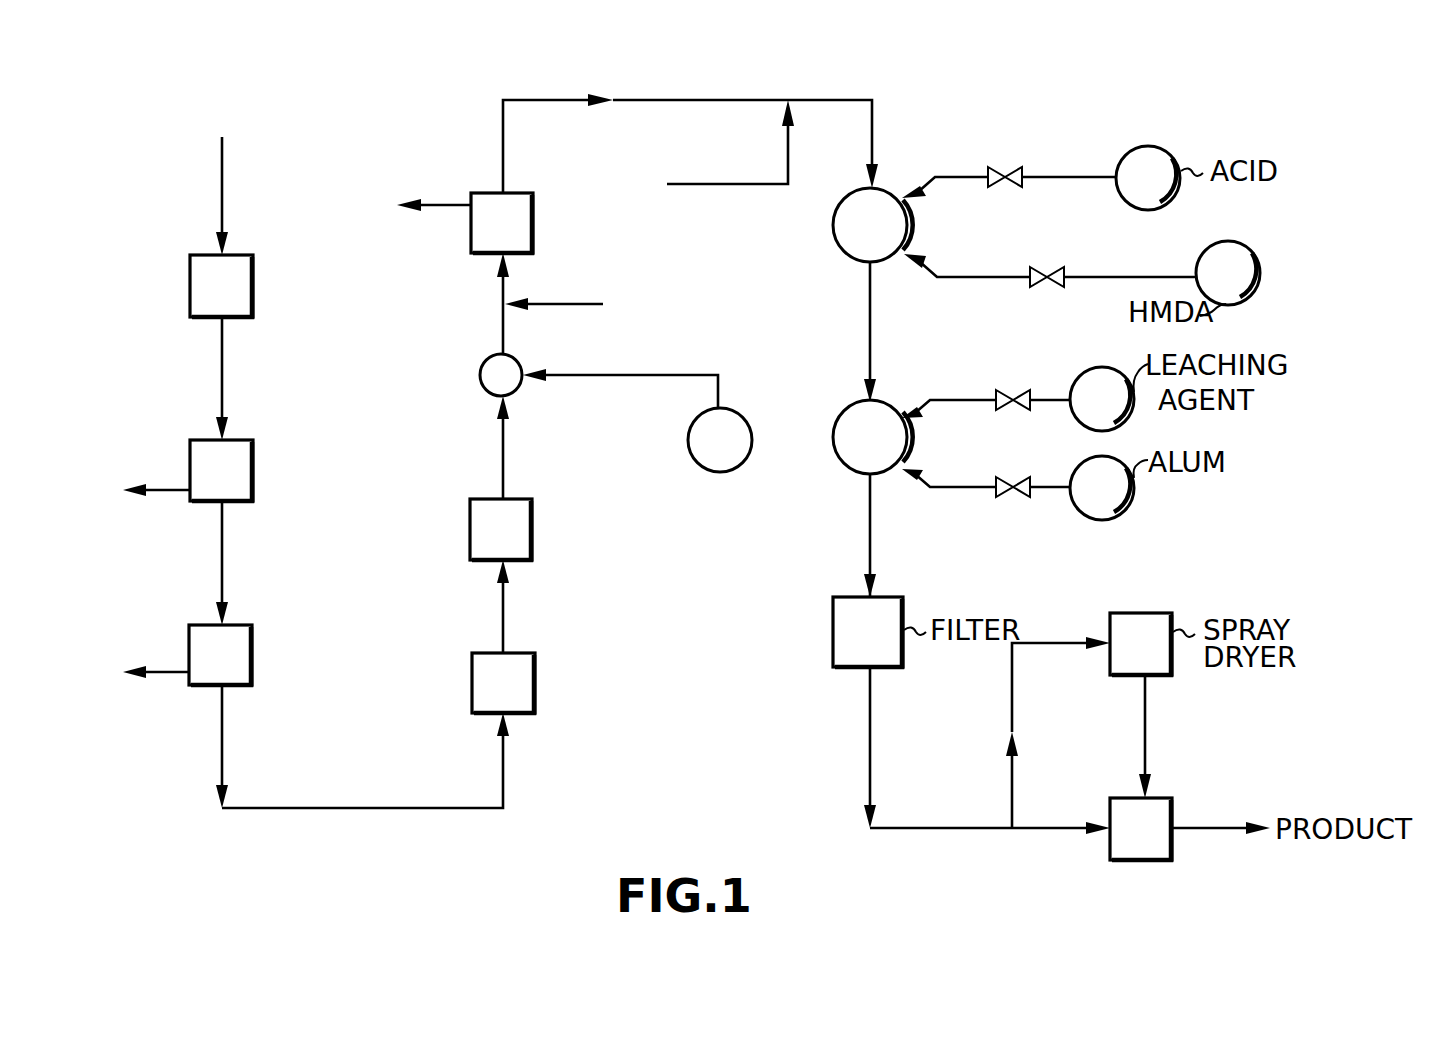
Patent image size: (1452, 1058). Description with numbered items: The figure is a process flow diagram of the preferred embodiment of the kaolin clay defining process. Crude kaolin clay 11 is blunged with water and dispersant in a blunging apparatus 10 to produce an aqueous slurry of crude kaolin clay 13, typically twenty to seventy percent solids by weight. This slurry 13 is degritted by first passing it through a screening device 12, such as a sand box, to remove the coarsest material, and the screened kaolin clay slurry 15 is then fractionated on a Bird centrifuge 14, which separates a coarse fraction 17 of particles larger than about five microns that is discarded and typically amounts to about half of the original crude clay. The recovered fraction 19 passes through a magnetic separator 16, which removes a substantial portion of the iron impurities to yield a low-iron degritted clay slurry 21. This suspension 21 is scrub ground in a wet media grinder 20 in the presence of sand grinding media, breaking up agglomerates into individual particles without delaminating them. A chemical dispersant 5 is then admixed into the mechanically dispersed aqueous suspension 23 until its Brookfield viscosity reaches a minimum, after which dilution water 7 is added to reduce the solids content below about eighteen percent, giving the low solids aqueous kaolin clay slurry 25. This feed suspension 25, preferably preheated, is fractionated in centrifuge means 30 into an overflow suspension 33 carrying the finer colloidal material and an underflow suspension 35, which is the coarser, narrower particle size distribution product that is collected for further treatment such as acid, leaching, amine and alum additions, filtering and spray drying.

The chemical dispersant 5 is at (596, 376).
The dilution water 7 is at (568, 305).
The blunging apparatus 10 is at (254, 288).
The crude kaolin clay 11 is at (224, 172).
The screening device 12 is at (254, 470).
The aqueous slurry of crude kaolin clay 13 is at (223, 350).
The Bird centrifuge 14 is at (253, 656).
The screened kaolin clay slurry 15 is at (223, 553).
The magnetic separator 16 is at (536, 682).
The coarse fraction 17 is at (162, 492).
The recovered fraction 19 is at (223, 750).
The wet media grinder 20 is at (533, 528).
The degritted clay slurry 21 is at (502, 612).
The mechanically dispersed aqueous suspension 23 is at (504, 450).
The low solids aqueous kaolin clay slurry 25 is at (504, 287).
The centrifuge means 30 is at (534, 222).
The overflow suspension 33 is at (470, 205).
The underflow suspension 35 is at (710, 100).